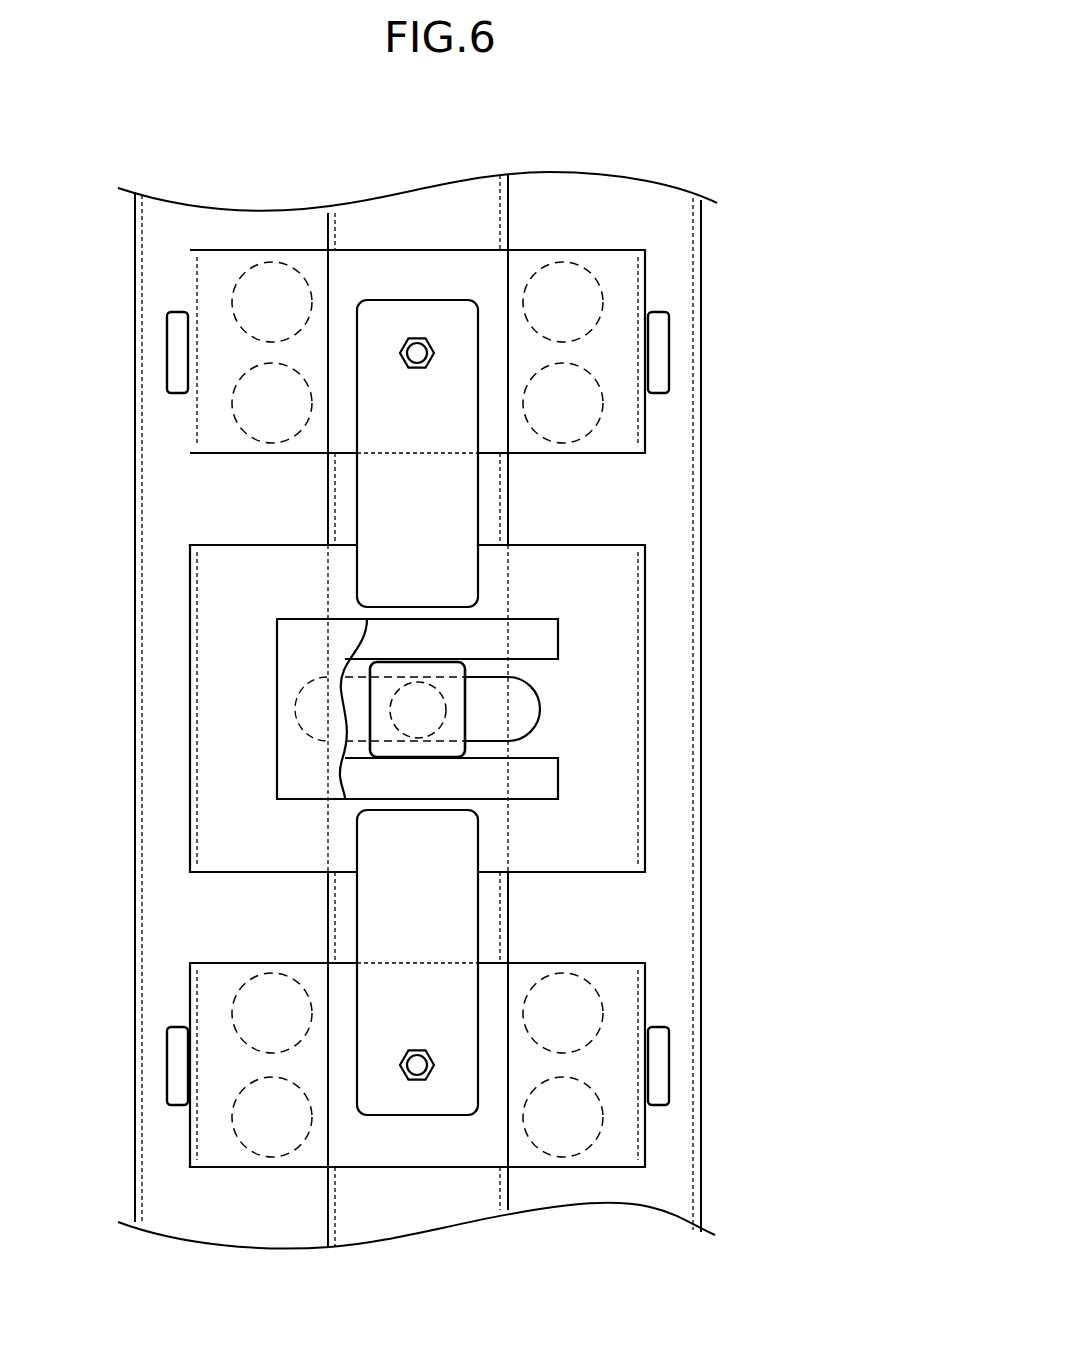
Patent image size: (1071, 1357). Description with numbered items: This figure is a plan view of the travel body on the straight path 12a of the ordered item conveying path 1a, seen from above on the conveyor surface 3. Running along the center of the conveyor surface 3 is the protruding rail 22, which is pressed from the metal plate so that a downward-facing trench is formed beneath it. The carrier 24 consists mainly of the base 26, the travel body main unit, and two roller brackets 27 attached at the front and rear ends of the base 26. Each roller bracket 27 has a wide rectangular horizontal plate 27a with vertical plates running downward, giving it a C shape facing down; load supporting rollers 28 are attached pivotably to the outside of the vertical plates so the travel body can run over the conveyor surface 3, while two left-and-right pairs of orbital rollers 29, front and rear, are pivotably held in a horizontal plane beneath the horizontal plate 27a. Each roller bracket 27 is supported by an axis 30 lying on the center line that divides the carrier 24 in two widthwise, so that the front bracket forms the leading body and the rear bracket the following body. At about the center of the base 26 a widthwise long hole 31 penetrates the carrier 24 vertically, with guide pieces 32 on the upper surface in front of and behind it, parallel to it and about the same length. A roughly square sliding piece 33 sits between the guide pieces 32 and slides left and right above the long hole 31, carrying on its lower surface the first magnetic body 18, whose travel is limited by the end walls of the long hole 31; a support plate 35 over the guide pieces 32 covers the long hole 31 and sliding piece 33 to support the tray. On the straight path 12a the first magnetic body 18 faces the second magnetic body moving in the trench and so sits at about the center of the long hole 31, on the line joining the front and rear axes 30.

The ordered item conveying path 1a is at (808, 484).
The conveyor surface 3 is at (653, 234).
The straight path 12a is at (704, 620).
The first magnetic body 18 is at (428, 710).
The rail 22 is at (453, 218).
The carrier 24 is at (165, 610).
The base 26 is at (617, 788).
The roller bracket 27 is at (617, 230).
The horizontal plate 27a is at (228, 263).
The load supporting roller 28 is at (176, 352).
The orbital roller 29 is at (293, 267).
The axis 30 is at (408, 340).
The long hole 31 is at (537, 703).
The guide piece 32 is at (538, 637).
The sliding piece 33 is at (398, 748).
The support plate 35 is at (300, 667).